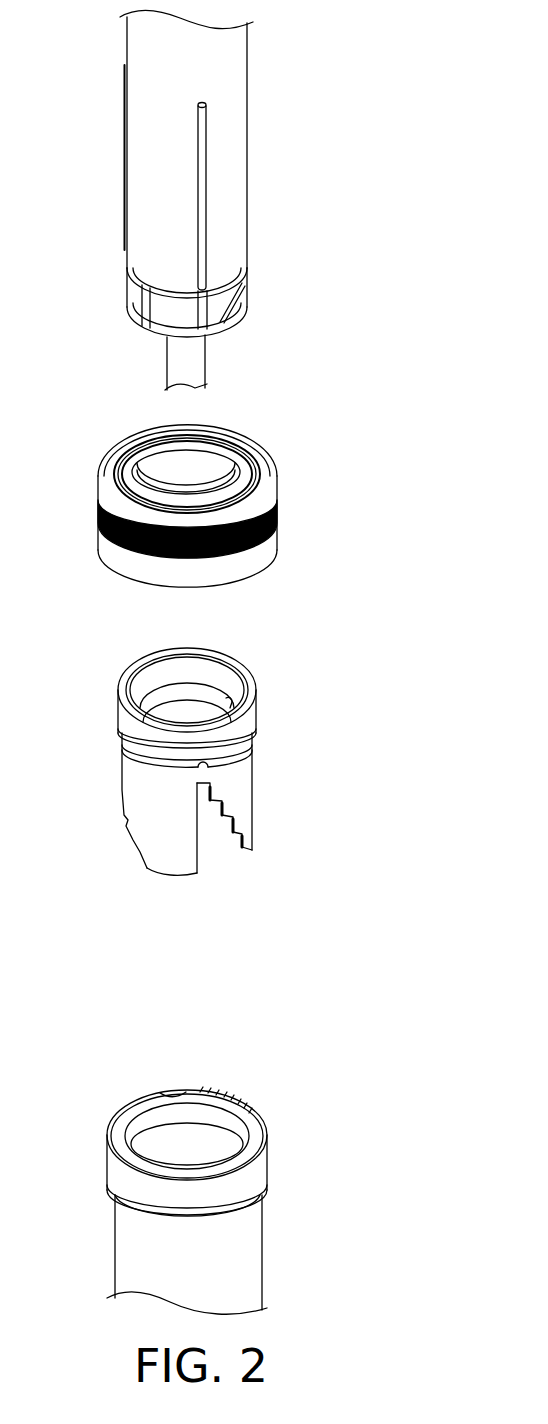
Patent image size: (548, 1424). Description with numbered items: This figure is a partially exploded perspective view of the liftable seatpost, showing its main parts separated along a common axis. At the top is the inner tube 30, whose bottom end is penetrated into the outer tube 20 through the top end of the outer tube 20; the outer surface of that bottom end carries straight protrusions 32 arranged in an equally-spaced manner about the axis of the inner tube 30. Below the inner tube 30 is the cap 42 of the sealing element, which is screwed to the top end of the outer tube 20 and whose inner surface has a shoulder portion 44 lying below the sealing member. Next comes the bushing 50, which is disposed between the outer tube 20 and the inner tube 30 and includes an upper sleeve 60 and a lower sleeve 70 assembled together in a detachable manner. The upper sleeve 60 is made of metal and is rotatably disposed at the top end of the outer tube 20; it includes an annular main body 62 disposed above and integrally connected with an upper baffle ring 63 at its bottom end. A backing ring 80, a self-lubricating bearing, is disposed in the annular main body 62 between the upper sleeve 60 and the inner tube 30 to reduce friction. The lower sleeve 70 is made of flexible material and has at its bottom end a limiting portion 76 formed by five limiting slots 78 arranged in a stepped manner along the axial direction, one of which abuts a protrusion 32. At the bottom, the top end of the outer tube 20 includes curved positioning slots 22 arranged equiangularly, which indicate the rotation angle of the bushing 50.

The outer tube 20 is at (250, 1200).
The positioning slots 22 is at (247, 1103).
The inner tube 30 is at (322, 74).
The protrusions 32 is at (204, 190).
The cap 42 is at (242, 480).
The shoulder portion 44 is at (213, 456).
The bushing 50 is at (220, 826).
The upper sleeve 60 is at (194, 667).
The annular main body 62 is at (130, 722).
The upper baffle ring 63 is at (160, 762).
The lower sleeve 70 is at (199, 899).
The limiting portion 76 is at (191, 924).
The limiting slots 78 is at (200, 788).
The backing ring 80 is at (218, 676).